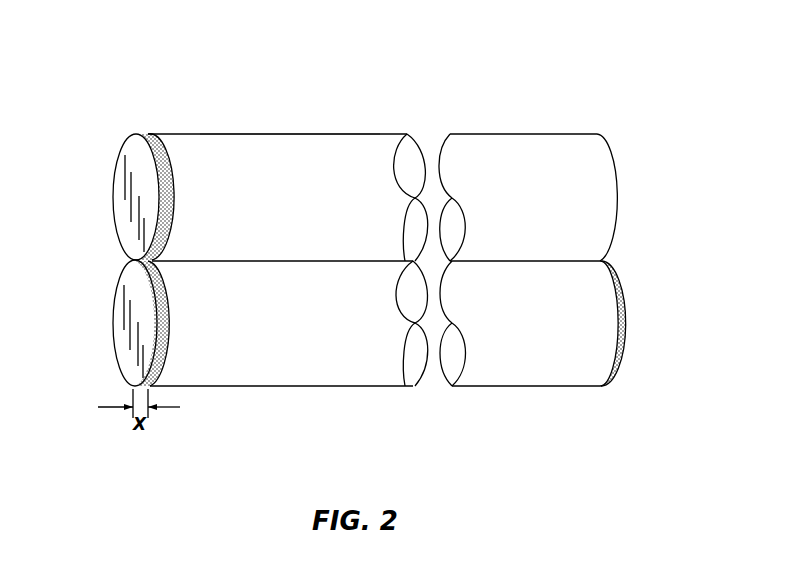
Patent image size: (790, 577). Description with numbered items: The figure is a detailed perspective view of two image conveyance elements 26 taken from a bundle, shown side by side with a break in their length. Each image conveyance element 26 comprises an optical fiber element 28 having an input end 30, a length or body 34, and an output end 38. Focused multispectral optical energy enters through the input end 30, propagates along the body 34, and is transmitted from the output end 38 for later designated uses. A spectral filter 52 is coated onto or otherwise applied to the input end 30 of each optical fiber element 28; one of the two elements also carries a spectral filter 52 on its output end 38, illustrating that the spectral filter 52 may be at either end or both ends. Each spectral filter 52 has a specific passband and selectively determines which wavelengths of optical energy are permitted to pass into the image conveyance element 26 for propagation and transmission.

The image conveyance element 26 is at (310, 128).
The optical fiber element 28 is at (260, 158).
The input end 30 is at (172, 126).
The body 34 is at (345, 165).
The output end 38 is at (626, 186).
The spectral filter 52 is at (120, 178).